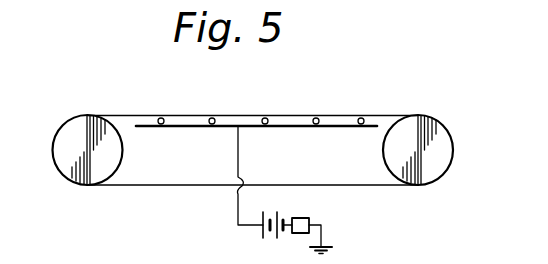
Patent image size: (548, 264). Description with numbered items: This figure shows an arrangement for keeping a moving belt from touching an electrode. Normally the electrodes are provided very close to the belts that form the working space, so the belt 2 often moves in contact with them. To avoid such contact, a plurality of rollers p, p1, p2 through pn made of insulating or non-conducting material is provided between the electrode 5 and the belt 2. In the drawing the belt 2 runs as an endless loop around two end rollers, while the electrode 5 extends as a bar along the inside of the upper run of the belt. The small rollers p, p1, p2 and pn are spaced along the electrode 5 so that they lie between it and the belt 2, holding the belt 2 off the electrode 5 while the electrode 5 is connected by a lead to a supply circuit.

The belt 2 is at (127, 114).
The electrode 5 is at (175, 128).
The roller p is at (164, 117).
The roller p1 is at (213, 117).
The roller p2 is at (266, 117).
The roller pn is at (363, 117).